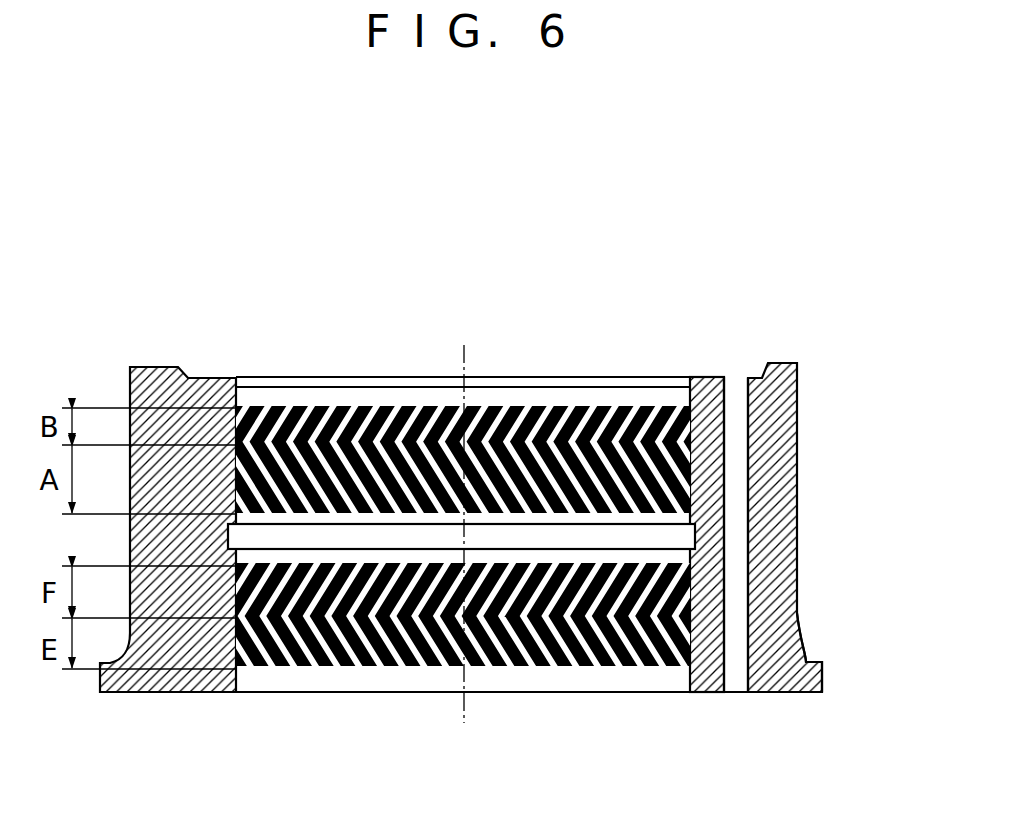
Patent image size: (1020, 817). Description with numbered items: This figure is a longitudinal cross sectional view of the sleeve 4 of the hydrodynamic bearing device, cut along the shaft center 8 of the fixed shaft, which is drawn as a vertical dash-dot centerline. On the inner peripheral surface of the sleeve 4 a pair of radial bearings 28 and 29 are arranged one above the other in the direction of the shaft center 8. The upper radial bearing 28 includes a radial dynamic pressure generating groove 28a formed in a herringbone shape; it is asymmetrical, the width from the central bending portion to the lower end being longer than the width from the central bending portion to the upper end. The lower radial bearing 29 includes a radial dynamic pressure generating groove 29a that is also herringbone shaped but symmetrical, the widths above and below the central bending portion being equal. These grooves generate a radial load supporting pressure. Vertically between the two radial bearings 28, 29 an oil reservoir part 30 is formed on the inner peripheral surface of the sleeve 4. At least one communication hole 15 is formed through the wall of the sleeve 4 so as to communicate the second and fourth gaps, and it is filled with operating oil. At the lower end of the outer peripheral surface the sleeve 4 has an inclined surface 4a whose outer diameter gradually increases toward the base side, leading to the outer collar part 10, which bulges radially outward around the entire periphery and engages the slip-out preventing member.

The sleeve 4 is at (158, 362).
The inclined surface 4a is at (800, 643).
The shaft center 8 is at (462, 710).
The outer collar part 10 is at (823, 668).
The communication hole 15 is at (733, 676).
The upper radial bearing 28 is at (370, 404).
The radial dynamic pressure generating groove 28a is at (563, 405).
The lower radial bearing 29 is at (346, 670).
The radial dynamic pressure generating groove 29a is at (518, 666).
The oil reservoir part 30 is at (697, 535).